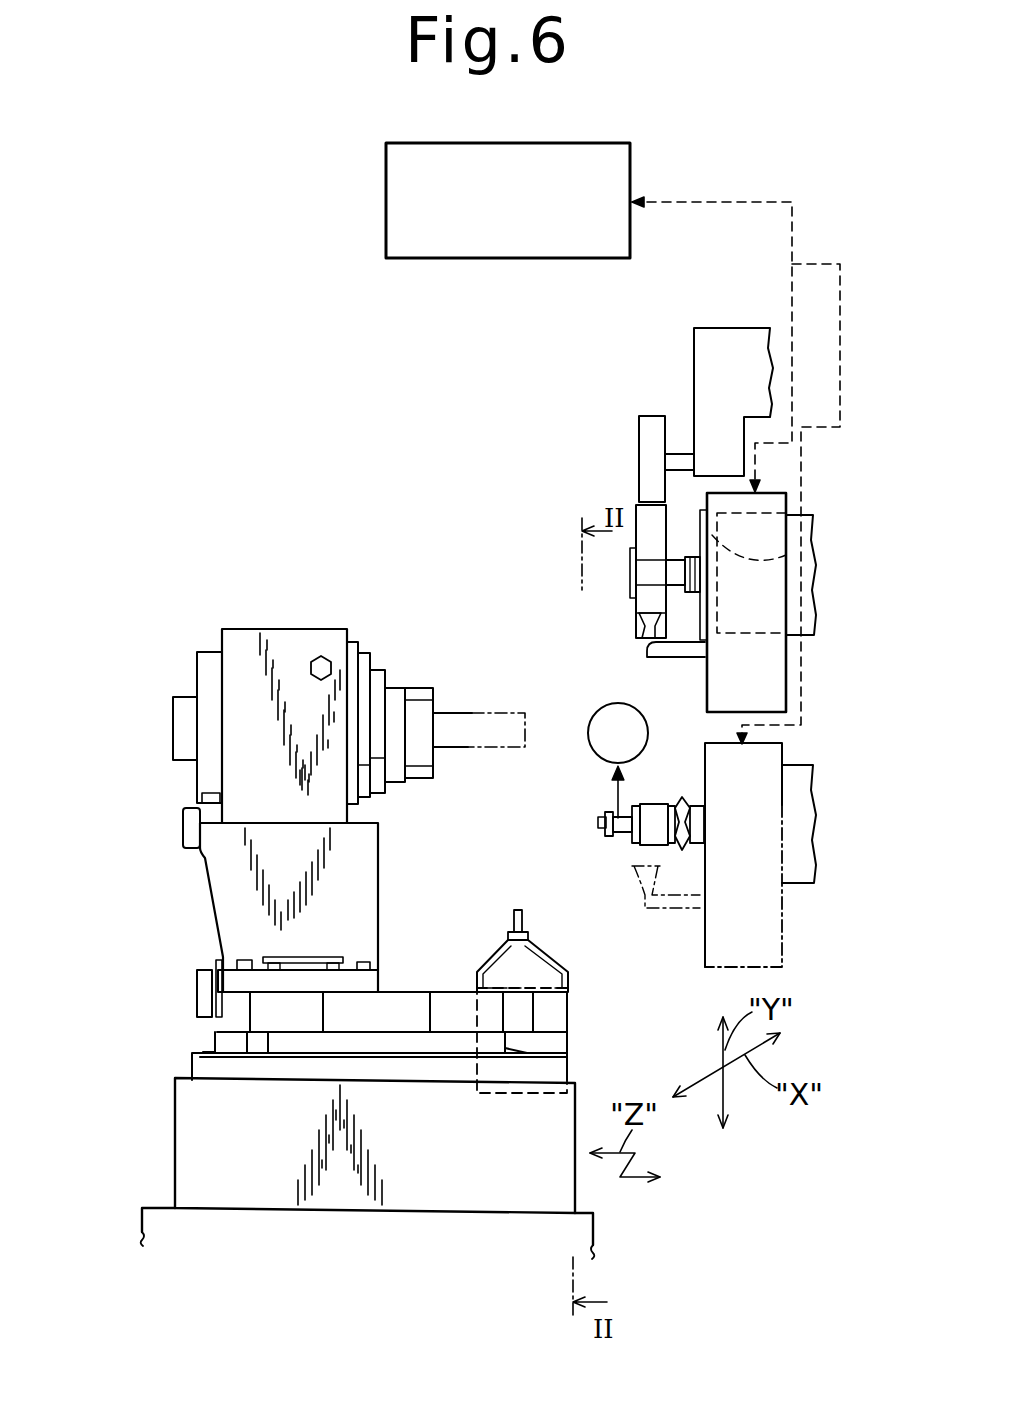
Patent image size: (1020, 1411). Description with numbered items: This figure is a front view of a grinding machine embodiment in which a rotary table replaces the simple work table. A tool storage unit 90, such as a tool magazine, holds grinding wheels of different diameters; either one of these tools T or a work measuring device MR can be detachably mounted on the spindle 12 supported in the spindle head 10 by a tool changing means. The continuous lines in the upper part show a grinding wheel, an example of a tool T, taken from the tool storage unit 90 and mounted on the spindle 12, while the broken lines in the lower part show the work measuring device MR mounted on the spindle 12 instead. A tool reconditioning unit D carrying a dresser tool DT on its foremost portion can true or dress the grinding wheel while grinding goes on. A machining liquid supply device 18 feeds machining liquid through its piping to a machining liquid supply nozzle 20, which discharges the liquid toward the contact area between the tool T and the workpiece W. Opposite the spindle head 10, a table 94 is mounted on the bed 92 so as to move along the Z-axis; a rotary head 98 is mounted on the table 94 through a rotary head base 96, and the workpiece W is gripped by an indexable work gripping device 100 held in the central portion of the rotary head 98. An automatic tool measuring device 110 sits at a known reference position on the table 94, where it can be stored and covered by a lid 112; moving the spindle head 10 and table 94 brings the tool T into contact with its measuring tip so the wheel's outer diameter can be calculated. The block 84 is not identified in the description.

The tool storage unit 90 is at (532, 143).
The spindle head 10 is at (776, 512).
The spindle 12 is at (820, 562).
The machining liquid supply device 18 is at (678, 657).
The machining liquid supply nozzle 20 is at (647, 623).
The second holding block 84 is at (786, 755).
The rotary head 98 is at (237, 647).
The work gripping device 100 is at (415, 703).
The rotary head base 96 is at (225, 885).
The automatic tool measuring device 110 is at (522, 922).
The lid 112 is at (556, 975).
The table 94 is at (197, 1115).
The bed 92 is at (155, 1225).
The tool reconditioning unit D is at (708, 347).
The dresser tool DT is at (652, 430).
The tool T is at (647, 518).
The workpiece W is at (460, 713).
The work measuring device MR is at (655, 805).